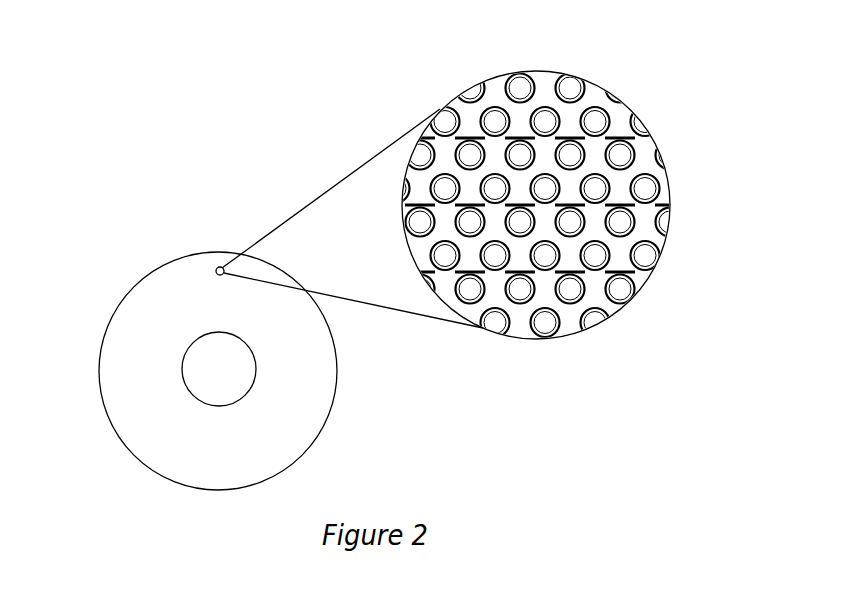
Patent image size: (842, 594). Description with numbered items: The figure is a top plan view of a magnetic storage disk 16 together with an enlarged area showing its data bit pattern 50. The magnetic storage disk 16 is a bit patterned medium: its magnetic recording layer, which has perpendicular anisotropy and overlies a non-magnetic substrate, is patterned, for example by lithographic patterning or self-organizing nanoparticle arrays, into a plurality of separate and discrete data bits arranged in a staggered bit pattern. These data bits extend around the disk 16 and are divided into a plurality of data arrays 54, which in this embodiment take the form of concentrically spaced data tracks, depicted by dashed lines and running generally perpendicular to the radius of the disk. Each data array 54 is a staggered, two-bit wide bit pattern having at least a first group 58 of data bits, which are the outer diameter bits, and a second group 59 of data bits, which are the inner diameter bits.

The magnetic storage disk 16 is at (123, 297).
The data bit pattern 50 is at (656, 335).
The data arrays 54 is at (658, 105).
The first group of data bits 58 is at (690, 223).
The second group of data bits 59 is at (675, 260).